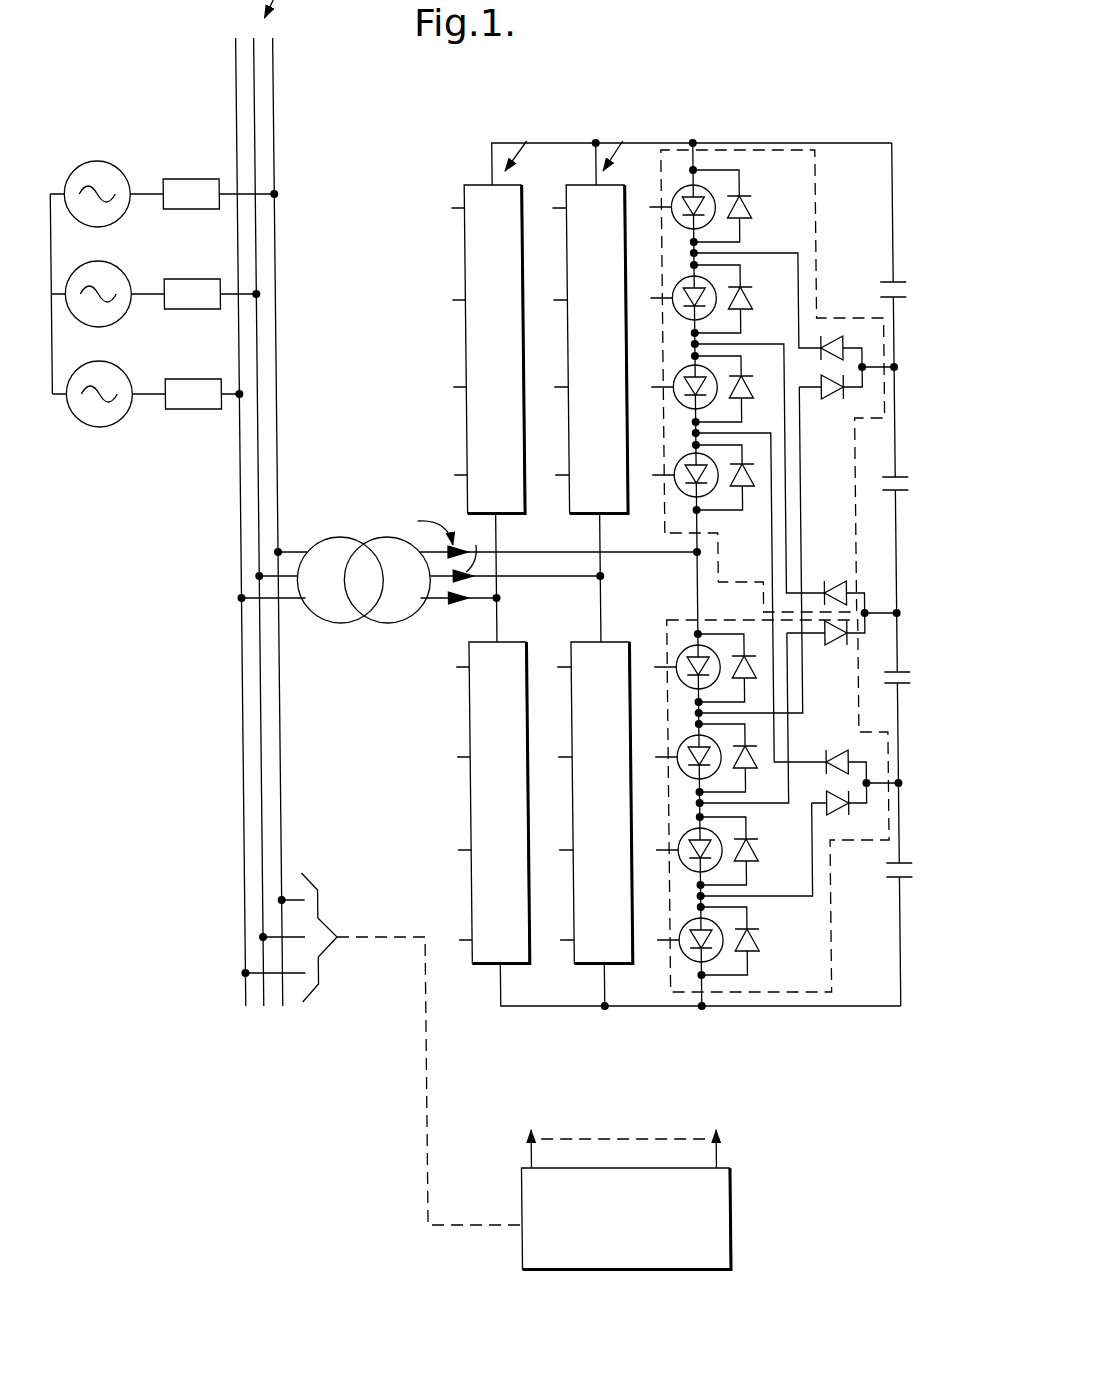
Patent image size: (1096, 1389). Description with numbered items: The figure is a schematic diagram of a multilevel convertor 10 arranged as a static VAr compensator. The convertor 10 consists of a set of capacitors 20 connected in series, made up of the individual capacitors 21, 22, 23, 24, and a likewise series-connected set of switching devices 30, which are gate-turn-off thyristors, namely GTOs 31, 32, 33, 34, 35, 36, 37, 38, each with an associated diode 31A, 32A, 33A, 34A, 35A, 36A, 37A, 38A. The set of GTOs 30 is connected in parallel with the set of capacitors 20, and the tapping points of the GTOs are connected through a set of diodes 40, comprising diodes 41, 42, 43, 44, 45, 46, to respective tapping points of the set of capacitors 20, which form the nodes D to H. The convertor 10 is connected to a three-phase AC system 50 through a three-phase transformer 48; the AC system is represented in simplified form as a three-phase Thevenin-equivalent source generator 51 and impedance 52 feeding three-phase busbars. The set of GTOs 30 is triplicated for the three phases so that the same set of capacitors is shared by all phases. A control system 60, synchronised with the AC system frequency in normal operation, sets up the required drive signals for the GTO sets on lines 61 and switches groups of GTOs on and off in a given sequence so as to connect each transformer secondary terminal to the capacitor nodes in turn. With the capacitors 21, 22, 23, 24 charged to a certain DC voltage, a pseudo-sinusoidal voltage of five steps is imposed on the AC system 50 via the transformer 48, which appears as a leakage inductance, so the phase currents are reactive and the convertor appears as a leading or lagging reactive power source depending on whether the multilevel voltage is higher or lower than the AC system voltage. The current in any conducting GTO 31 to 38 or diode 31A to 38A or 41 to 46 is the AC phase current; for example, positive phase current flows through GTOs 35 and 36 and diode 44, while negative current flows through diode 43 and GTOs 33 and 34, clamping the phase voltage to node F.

The multilevel convertor 10 is at (401, 146).
The set of capacitors 20 is at (859, 557).
The capacitor 21 is at (878, 283).
The capacitor 22 is at (880, 480).
The capacitor 23 is at (881, 683).
The capacitor 24 is at (890, 869).
The set of switching devices 30 is at (712, 165).
The GTO 31 is at (682, 190).
The GTO 32 is at (682, 282).
The GTO 33 is at (681, 371).
The GTO 34 is at (681, 459).
The GTO 35 is at (681, 651).
The GTO 36 is at (681, 741).
The GTO 37 is at (681, 834).
The GTO 38 is at (682, 923).
The diode 31A is at (753, 217).
The diode 32A is at (747, 305).
The diode 33A is at (748, 392).
The diode 34A is at (752, 488).
The diode 35A is at (735, 660).
The diode 36A is at (758, 768).
The diode 37A is at (756, 851).
The diode 38A is at (757, 942).
The set of diodes 40 is at (783, 571).
The diode 41 is at (836, 338).
The diode 42 is at (836, 397).
The diode 43 is at (846, 585).
The diode 44 is at (846, 642).
The diode 45 is at (852, 748).
The diode 46 is at (846, 814).
The three-phase transformer 48 is at (338, 626).
The three-phase AC system 50 is at (161, 286).
The source generator 51 is at (77, 439).
The impedance 52 is at (176, 439).
The control system 60 is at (711, 1242).
The lines 61 is at (726, 1138).